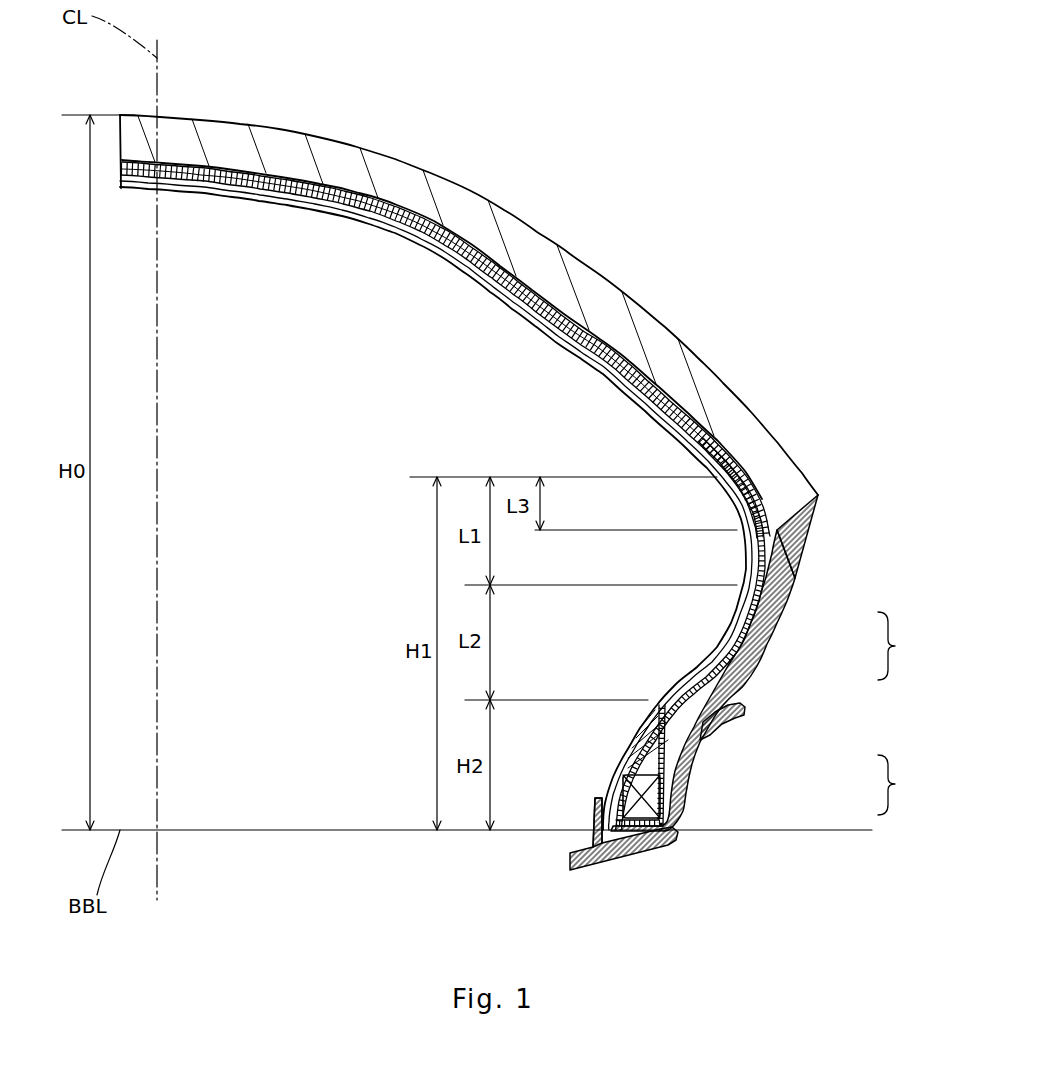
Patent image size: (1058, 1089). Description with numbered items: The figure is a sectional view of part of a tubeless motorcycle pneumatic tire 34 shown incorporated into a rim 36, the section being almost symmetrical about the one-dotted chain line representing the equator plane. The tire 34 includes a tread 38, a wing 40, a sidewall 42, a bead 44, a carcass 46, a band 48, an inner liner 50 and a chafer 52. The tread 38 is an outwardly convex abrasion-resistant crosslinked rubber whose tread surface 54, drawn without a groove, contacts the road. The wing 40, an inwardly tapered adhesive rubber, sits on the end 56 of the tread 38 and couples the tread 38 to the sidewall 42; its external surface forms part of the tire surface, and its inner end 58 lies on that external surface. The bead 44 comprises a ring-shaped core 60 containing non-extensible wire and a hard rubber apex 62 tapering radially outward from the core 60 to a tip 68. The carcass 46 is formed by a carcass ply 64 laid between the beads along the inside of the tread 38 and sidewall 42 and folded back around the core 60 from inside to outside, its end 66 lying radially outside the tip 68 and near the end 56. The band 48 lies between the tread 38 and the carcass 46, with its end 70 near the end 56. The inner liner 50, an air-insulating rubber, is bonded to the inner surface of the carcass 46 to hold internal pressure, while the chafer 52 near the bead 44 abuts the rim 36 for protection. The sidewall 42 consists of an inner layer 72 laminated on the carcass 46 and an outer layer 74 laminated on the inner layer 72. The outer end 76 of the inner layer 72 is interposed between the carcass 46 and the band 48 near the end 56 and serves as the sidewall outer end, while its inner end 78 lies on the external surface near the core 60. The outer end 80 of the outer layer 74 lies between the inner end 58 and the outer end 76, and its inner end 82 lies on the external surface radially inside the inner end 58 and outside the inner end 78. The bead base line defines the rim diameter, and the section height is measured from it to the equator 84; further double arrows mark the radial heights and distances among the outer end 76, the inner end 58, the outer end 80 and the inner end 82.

The tire 34 is at (740, 27).
The rim 36 is at (577, 873).
The tread 38 is at (386, 150).
The wing 40 is at (817, 550).
The sidewall 42 is at (901, 646).
The bead 44 is at (901, 785).
The carcass 46 is at (375, 220).
The band 48 is at (490, 255).
The inner liner 50 is at (503, 300).
The chafer 52 is at (597, 840).
The tread surface 54 is at (284, 123).
The end of the tread 56 is at (790, 527).
The inner end of the wing 58 is at (797, 587).
The core 60 is at (687, 790).
The apex 62 is at (697, 747).
The carcass ply 64 is at (430, 240).
The end of the carcass ply 66 is at (767, 497).
The tip of the apex 68 is at (710, 667).
The end of the band 70 is at (818, 493).
The inner layer 72 is at (753, 668).
The outer layer 74 is at (777, 620).
The outer end of the inner layer 76 is at (750, 477).
The inner end of the inner layer 78 is at (652, 797).
The outer end of the outer layer 80 is at (807, 533).
The inner end of the outer layer 82 is at (743, 710).
The equator 84 is at (160, 113).